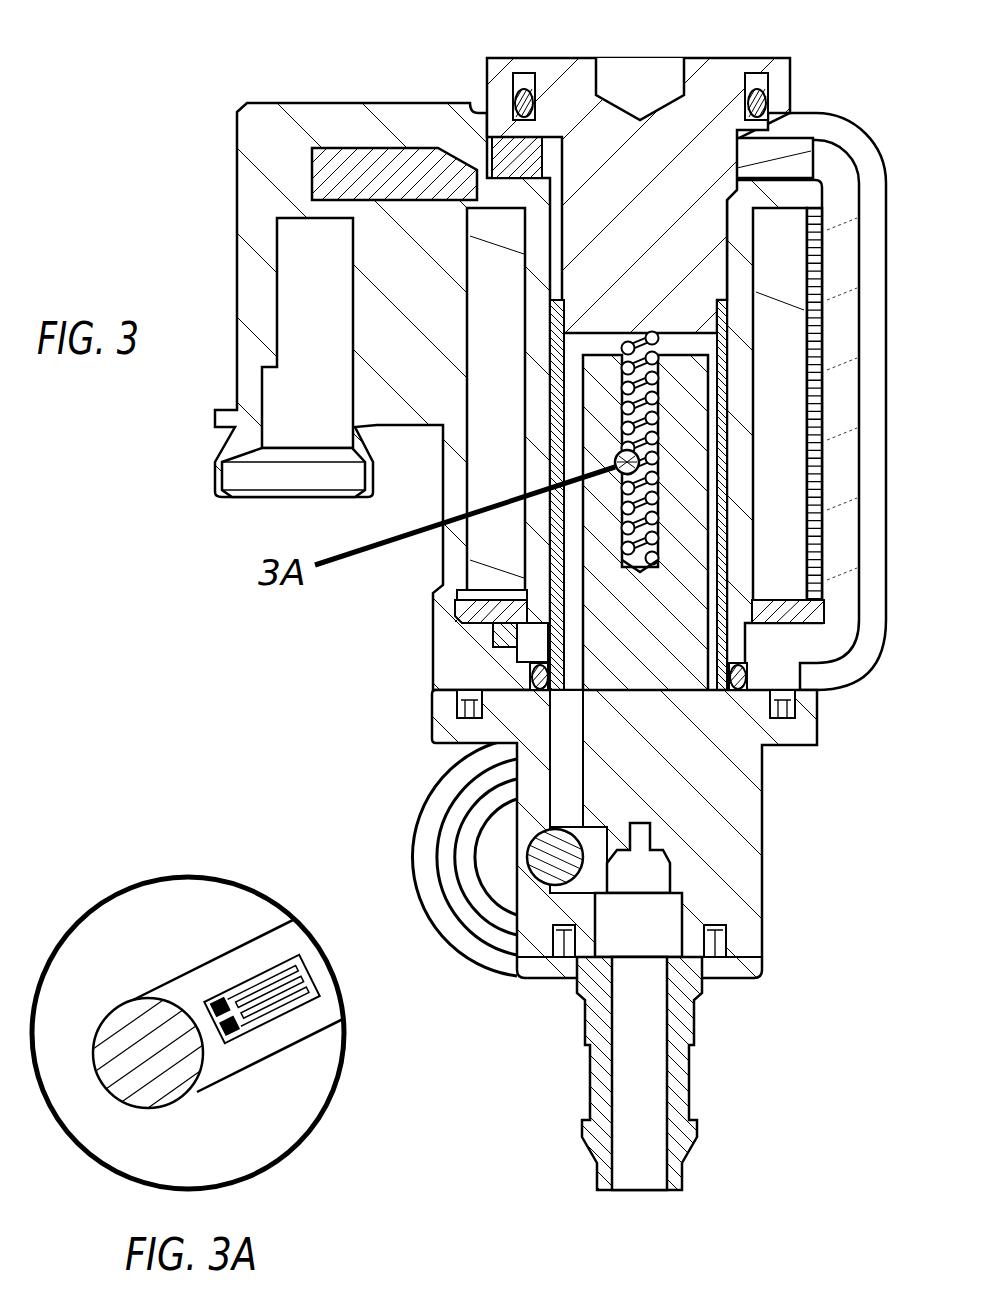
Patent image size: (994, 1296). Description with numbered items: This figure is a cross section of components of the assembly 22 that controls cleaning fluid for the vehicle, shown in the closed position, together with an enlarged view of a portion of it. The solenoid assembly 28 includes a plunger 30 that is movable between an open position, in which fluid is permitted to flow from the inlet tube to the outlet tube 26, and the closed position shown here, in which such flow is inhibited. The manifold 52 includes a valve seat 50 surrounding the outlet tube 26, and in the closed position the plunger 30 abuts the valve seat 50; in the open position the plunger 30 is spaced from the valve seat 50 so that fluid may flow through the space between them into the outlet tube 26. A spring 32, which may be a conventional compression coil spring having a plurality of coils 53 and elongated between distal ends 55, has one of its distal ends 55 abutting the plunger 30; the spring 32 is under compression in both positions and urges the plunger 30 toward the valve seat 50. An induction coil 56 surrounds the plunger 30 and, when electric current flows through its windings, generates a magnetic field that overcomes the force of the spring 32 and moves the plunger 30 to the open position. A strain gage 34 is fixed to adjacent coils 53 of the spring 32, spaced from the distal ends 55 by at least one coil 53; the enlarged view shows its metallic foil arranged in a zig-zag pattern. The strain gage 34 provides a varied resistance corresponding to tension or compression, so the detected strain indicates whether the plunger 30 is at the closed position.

In FIG. 3, the assembly 22 is at (115, 90).
In FIG. 3, the outlet tube 26 is at (690, 1070).
In FIG. 3, the solenoid assembly 28 is at (817, 110).
In FIG. 3, the plunger 30 is at (692, 748).
In FIG. 3, the spring 32 is at (575, 380).
In FIG. 3, the strain gage 34 is at (640, 520).
In FIG. 3A, the strain gage 34 is at (250, 980).
In FIG. 3, the valve seat 50 is at (665, 828).
In FIG. 3, the manifold 52 is at (764, 852).
In FIG. 3, the coil 53 is at (600, 600).
In FIG. 3A, the coil 53 is at (200, 1087).
In FIG. 3, the distal end 55 is at (620, 338).
In FIG. 3, the induction coil 56 is at (490, 310).